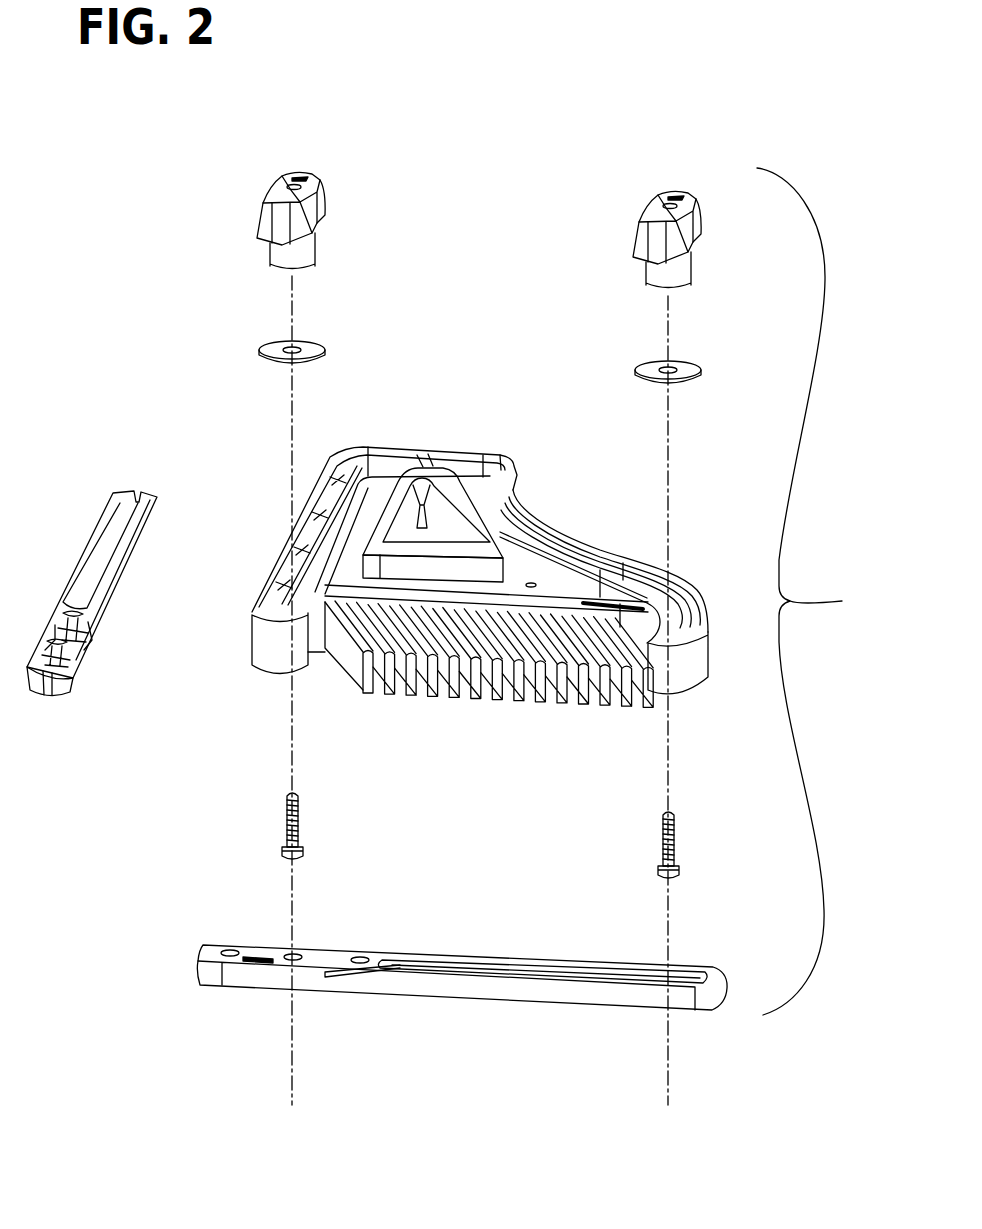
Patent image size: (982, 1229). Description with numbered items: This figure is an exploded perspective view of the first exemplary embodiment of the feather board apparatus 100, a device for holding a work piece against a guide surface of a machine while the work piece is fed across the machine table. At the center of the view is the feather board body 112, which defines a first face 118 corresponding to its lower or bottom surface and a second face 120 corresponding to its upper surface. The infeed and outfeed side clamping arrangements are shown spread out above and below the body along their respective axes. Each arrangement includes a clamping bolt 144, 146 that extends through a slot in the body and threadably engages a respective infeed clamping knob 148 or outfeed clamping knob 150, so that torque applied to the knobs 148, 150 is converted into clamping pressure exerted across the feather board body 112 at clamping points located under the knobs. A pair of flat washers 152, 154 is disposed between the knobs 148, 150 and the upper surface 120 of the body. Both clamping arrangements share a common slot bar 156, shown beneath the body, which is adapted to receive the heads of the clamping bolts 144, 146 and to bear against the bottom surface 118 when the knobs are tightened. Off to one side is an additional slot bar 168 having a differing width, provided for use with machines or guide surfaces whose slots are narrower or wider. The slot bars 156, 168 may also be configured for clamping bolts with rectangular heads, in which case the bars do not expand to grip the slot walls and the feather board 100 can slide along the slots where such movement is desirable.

The feather board apparatus 100 is at (828, 591).
The feather board body 112 is at (277, 572).
The first face 118 is at (682, 692).
The second face 120 is at (483, 588).
The infeed clamping bolt 144 is at (287, 818).
The outfeed clamping bolt 146 is at (680, 864).
The infeed clamping knob 148 is at (272, 220).
The outfeed clamping knob 150 is at (700, 222).
The flat washer 152 is at (260, 348).
The flat washer 154 is at (702, 365).
The slot bar 156 is at (200, 958).
The additional slot bar 168 is at (82, 664).